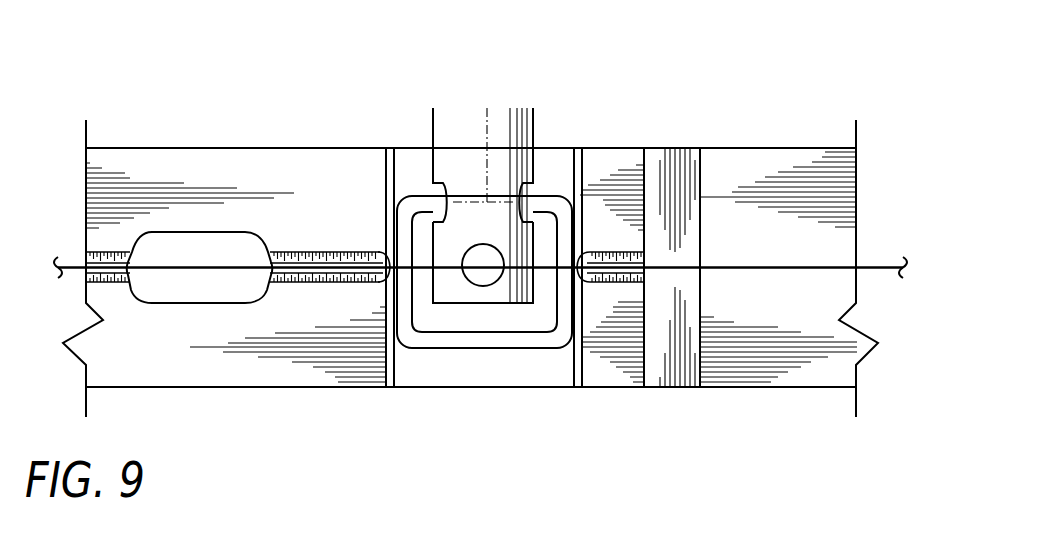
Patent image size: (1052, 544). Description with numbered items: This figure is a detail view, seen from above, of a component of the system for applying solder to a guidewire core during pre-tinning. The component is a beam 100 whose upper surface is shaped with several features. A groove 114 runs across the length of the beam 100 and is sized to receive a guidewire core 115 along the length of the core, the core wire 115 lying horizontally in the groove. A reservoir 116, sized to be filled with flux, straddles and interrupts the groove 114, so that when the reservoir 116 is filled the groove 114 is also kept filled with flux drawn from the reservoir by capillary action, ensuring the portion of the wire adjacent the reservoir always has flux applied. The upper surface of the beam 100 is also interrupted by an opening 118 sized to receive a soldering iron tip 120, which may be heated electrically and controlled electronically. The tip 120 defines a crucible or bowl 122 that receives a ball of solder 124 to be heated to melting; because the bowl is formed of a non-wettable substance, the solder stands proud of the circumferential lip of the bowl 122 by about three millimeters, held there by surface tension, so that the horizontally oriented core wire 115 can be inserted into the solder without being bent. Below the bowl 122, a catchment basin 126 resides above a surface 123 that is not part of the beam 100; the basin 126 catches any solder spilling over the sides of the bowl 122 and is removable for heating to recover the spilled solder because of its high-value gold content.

The beam 100 is at (224, 112).
The groove 114 is at (108, 253).
The guidewire core 115 is at (900, 262).
The reservoir 116 is at (225, 232).
The opening 118 is at (570, 363).
The soldering iron tip 120 is at (446, 165).
The bowl 122 is at (480, 277).
The surface 123 is at (510, 365).
The ball of solder 124 is at (483, 258).
The catchment basin 126 is at (403, 227).